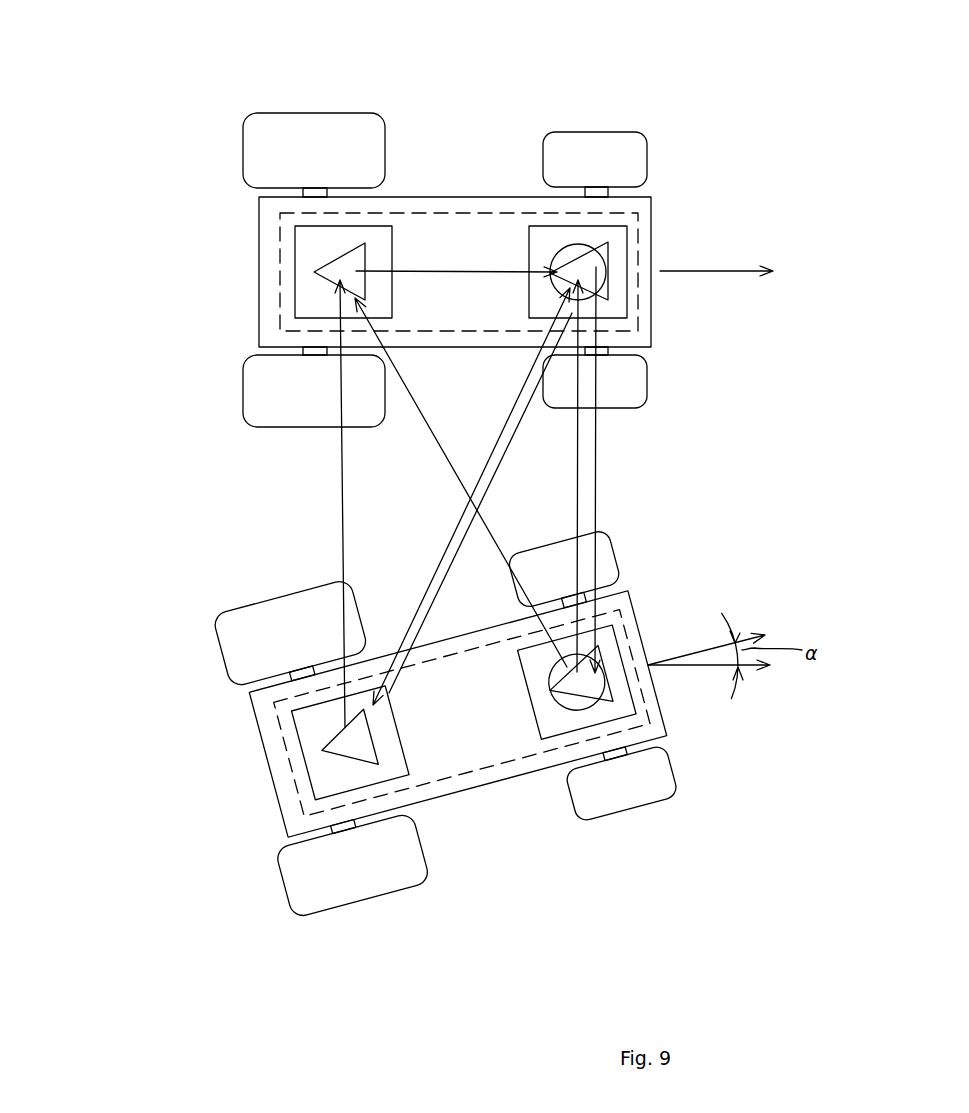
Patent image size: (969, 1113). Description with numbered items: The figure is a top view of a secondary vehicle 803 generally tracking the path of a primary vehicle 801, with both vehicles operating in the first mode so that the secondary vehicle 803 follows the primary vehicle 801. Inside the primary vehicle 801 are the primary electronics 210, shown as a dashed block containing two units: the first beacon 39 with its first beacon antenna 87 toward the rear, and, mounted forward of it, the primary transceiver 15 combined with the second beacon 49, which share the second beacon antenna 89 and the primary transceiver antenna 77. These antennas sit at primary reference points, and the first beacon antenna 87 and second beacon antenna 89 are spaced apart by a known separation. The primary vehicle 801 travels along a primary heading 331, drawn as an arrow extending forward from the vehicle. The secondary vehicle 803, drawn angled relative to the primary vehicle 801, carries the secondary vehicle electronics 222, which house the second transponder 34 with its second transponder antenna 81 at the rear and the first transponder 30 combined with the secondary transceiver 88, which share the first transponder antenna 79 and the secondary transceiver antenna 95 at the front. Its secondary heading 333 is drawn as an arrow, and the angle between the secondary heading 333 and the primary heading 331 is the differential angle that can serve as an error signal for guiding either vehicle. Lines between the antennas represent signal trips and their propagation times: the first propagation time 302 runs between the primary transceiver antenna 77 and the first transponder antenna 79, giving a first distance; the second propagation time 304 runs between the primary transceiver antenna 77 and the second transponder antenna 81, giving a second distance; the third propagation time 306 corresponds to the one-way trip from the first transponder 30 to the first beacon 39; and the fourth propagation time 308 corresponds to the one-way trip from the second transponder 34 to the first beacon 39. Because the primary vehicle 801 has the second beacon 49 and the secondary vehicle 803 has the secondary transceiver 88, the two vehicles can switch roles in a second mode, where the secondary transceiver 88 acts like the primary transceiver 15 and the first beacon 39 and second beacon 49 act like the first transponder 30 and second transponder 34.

The primary vehicle 801 is at (443, 197).
The primary electronics 210 is at (412, 213).
The primary transceiver 15 is at (602, 176).
The second beacon 49 is at (529, 260).
The second beacon antenna 89 is at (558, 270).
The primary transceiver antenna 77 is at (580, 243).
The primary heading 331 is at (720, 271).
The first beacon 39 is at (295, 240).
The first beacon antenna 87 is at (323, 262).
The third propagation time 306 is at (430, 438).
The fourth propagation time 308 is at (343, 525).
The first propagation time 302 is at (580, 445).
The second propagation time 304 is at (540, 457).
The secondary heading 333 is at (693, 650).
The second transponder antenna 81 is at (323, 748).
The second transponder 34 is at (345, 722).
The first transponder antenna 79 is at (610, 700).
The secondary transceiver antenna 95 is at (555, 707).
The first transponder 30 is at (641, 807).
The secondary transceiver 88 is at (541, 739).
The secondary vehicle electronics 222 is at (432, 783).
The secondary vehicle 803 is at (477, 787).